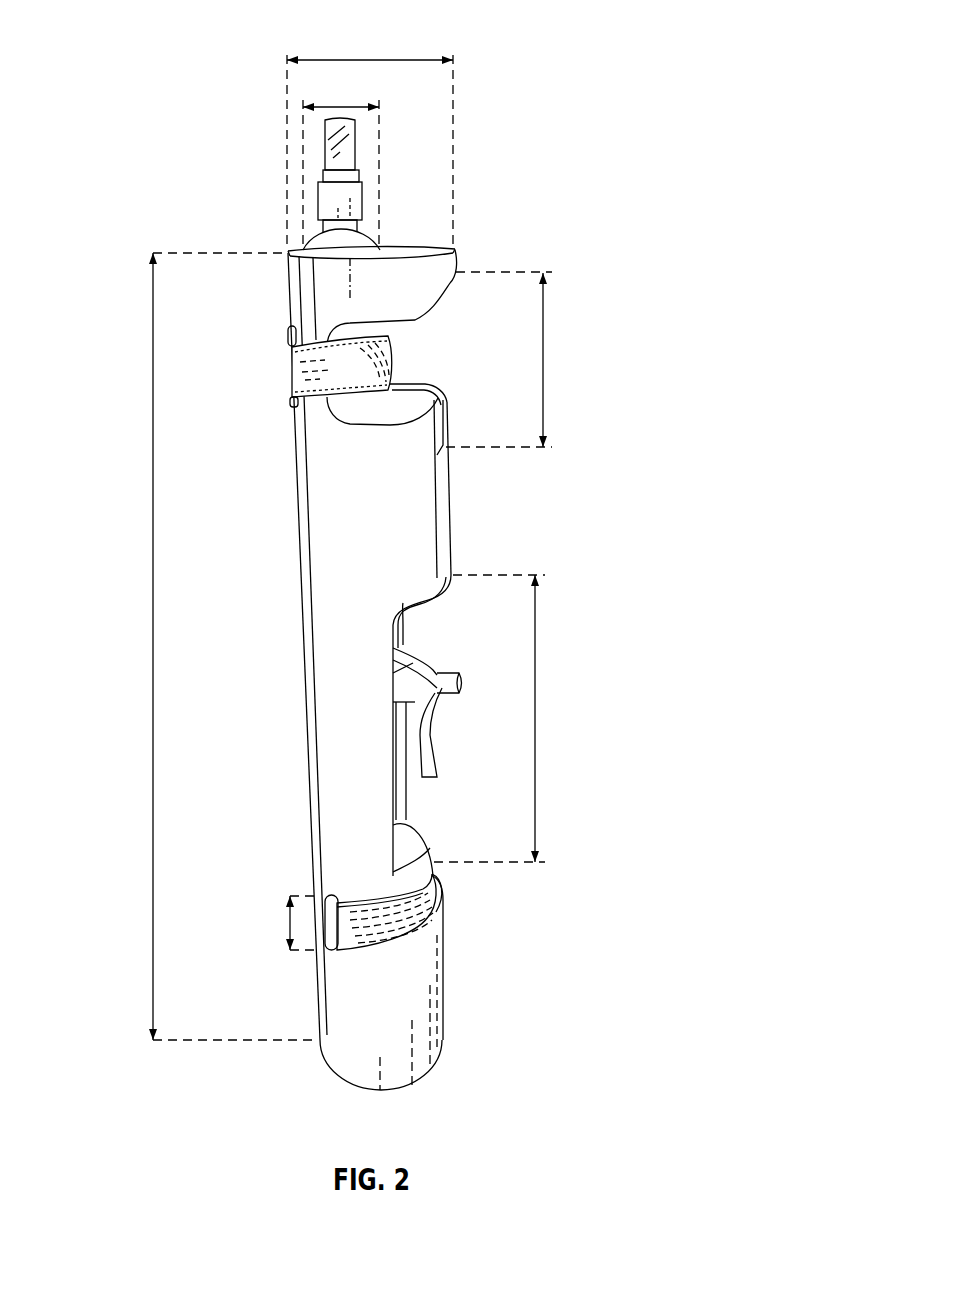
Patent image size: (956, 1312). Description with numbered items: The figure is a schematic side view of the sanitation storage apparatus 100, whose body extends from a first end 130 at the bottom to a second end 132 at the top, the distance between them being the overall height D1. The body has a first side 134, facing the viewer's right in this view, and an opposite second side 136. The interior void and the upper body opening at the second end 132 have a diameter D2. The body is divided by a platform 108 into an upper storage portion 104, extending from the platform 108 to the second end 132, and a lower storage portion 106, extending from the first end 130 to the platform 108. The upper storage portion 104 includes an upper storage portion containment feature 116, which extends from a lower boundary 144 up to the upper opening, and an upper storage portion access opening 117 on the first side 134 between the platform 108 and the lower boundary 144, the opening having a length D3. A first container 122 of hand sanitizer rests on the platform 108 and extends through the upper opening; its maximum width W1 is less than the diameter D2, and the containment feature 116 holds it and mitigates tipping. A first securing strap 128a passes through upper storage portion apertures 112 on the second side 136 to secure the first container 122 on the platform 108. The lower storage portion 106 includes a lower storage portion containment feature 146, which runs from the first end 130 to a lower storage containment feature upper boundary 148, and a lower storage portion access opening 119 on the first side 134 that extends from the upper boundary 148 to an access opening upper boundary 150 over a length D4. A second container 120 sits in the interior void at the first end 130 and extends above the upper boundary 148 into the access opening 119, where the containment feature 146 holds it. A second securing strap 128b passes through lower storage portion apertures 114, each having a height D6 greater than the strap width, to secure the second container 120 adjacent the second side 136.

The sanitation storage apparatus 100 is at (482, 98).
The upper storage portion 104 is at (492, 312).
The lower storage portion 106 is at (498, 887).
The platform 108 is at (444, 448).
The upper storage portion apertures 112 is at (289, 338).
The lower storage portion apertures 114 is at (321, 903).
The upper storage portion containment feature 116 is at (455, 272).
The upper storage portion access opening 117 is at (404, 381).
The lower storage portion access opening 119 is at (441, 633).
The second container 120 is at (404, 842).
The first container 122 is at (362, 244).
The first securing strap 128a is at (349, 366).
The second securing strap 128b is at (384, 907).
The first end 130 is at (418, 1088).
The second end 132 is at (453, 247).
The first side 134 is at (526, 524).
The second side 136 is at (131, 444).
The lower boundary 144 is at (449, 283).
The lower storage portion containment feature 146 is at (436, 989).
The lower storage containment feature upper boundary 148 is at (437, 899).
The access opening upper boundary 150 is at (452, 562).
The overall height D1 is at (151, 664).
The diameter D2 is at (318, 58).
The length D3 is at (545, 357).
The length D4 is at (537, 741).
The height D6 is at (289, 926).
The first container maximum width W1 is at (352, 105).